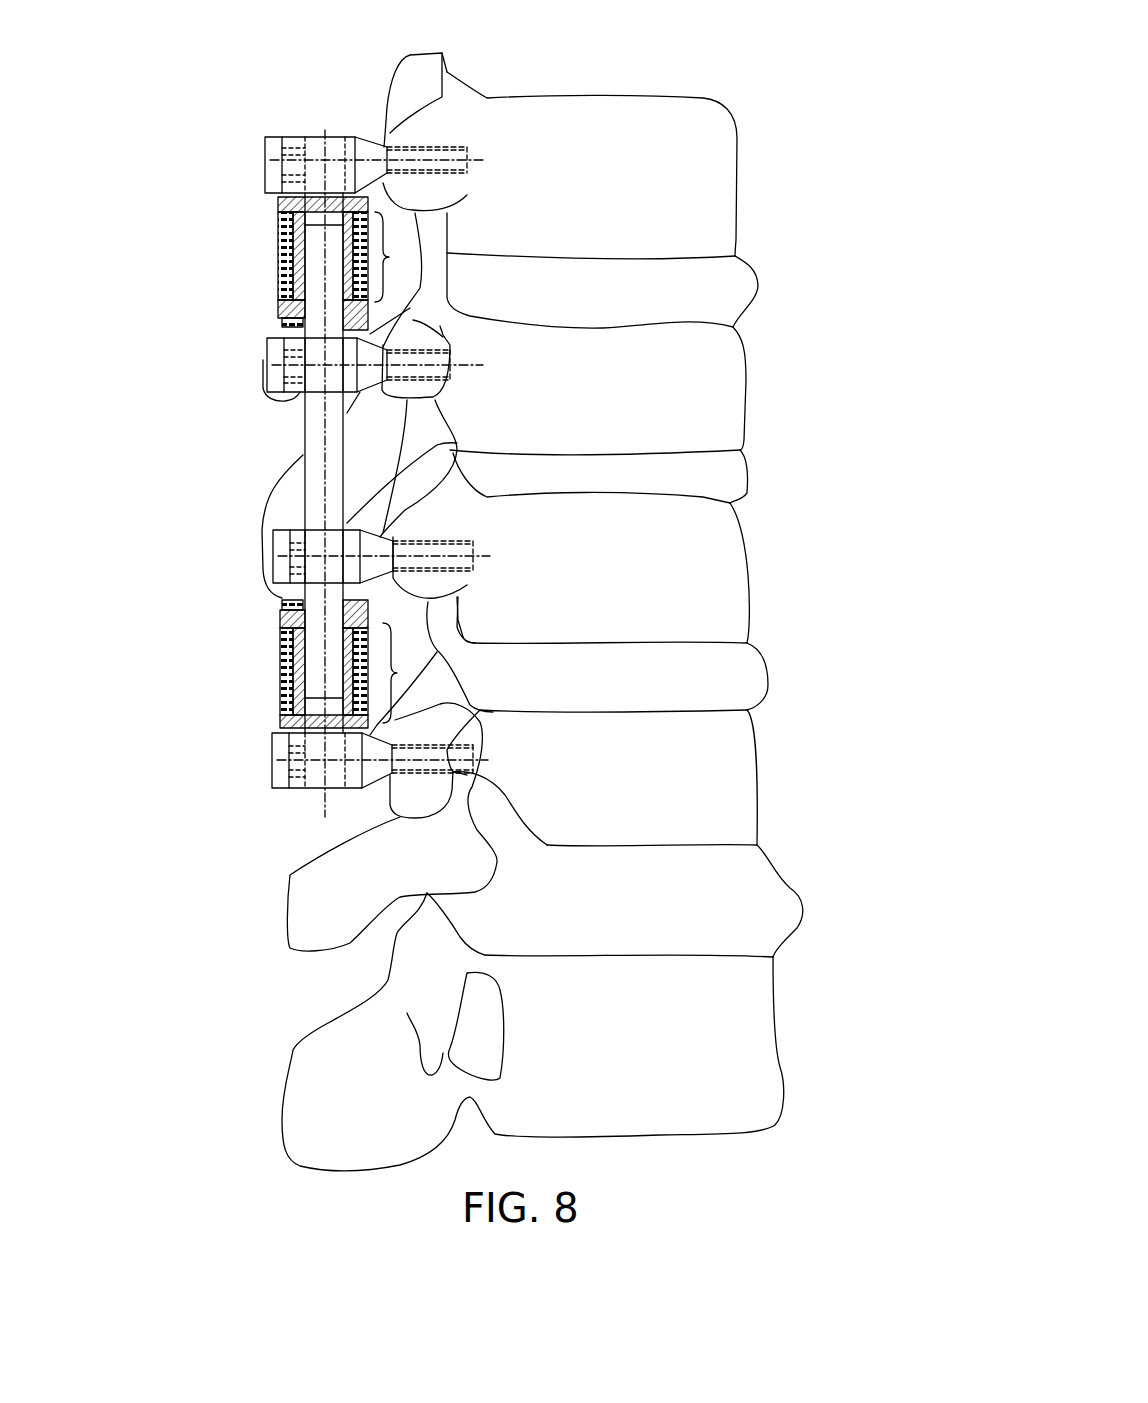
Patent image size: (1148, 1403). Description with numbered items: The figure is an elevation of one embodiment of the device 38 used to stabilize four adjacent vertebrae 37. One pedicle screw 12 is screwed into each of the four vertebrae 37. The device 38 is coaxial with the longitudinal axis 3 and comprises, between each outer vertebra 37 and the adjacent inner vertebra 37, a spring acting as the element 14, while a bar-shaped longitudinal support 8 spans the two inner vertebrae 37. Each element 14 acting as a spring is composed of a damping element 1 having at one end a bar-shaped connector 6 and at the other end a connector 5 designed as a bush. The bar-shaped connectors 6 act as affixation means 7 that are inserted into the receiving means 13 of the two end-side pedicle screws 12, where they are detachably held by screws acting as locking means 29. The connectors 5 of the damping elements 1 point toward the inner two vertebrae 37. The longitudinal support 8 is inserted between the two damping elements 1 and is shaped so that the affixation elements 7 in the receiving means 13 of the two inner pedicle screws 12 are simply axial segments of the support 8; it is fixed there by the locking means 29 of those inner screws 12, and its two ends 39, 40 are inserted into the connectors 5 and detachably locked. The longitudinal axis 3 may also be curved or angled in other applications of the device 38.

The damping element 1 is at (280, 462).
The longitudinal axis 3 is at (327, 805).
The connector 5 is at (270, 317).
The bar-shaped connector 6 is at (327, 198).
The affixation means 7 is at (313, 175).
The longitudinal support 8 is at (297, 433).
The pedicle screw 12 is at (262, 128).
The receiving means 13 is at (343, 150).
The element acting as a spring 14 is at (352, 467).
The locking means 29 is at (277, 155).
The vertebra 37 is at (657, 180).
The device 38 is at (386, 456).
The end of the longitudinal support 39 is at (317, 257).
The end of the longitudinal support 40 is at (320, 680).